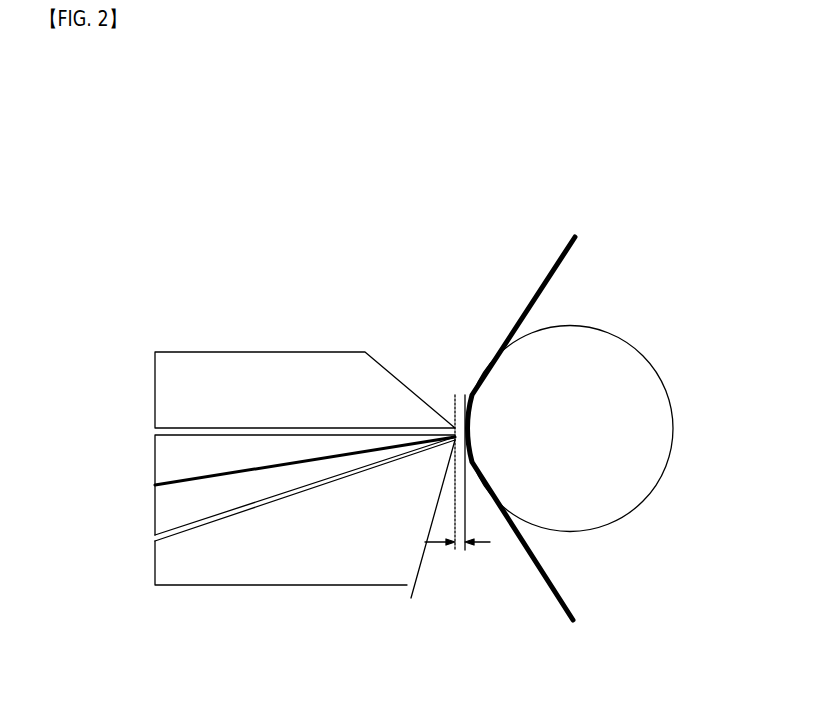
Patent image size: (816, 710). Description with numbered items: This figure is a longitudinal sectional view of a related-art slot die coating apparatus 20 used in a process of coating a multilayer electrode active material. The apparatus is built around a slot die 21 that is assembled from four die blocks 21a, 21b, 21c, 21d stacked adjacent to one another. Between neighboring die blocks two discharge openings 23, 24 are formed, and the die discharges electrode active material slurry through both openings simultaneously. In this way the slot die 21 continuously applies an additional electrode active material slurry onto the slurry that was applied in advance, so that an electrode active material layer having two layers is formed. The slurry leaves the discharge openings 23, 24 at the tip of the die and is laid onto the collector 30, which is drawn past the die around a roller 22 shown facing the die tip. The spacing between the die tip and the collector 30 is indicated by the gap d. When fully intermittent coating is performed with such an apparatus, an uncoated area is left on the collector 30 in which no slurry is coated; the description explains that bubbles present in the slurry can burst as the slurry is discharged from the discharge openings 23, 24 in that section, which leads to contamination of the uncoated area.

The slot die coating apparatus 20 is at (377, 128).
The slot die 21 is at (90, 362).
The die block 21a is at (155, 380).
The die block 21b is at (155, 454).
The die block 21c is at (155, 508).
The die block 21d is at (155, 570).
The roller 22 is at (643, 367).
The discharge opening 23 is at (422, 427).
The discharge opening 24 is at (398, 458).
The collector 30 is at (557, 255).
The gap distance d is at (457, 488).